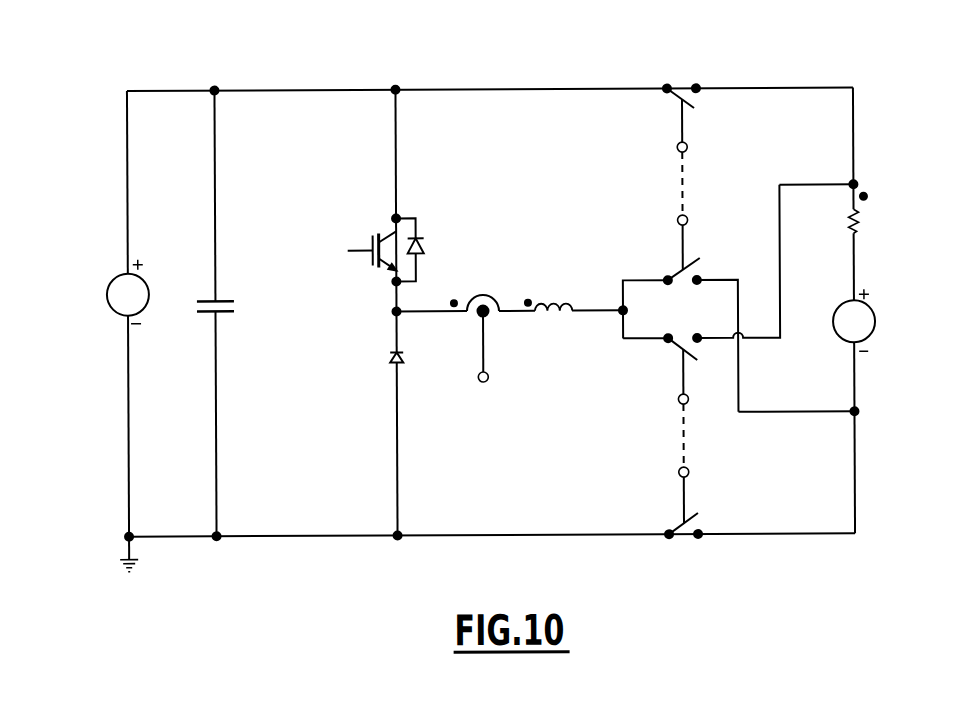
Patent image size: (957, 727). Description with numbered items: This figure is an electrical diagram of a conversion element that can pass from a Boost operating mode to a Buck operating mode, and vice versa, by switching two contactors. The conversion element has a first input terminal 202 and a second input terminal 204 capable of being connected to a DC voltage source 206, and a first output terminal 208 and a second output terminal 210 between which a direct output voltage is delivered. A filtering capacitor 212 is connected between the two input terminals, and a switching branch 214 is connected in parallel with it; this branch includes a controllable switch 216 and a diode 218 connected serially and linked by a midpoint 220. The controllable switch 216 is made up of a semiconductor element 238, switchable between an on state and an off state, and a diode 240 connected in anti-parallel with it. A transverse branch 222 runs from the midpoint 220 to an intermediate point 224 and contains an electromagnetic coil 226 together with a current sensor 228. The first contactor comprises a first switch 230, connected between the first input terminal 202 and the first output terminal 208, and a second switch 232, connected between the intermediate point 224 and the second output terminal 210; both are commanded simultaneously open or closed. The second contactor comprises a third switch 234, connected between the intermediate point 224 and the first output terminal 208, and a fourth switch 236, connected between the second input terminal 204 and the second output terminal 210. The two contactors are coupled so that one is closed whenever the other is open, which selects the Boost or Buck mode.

The first input terminal 202 is at (215, 89).
The second input terminal 204 is at (216, 539).
The DC voltage source 206 is at (110, 281).
The first output terminal 208 is at (856, 184).
The second output terminal 210 is at (856, 413).
The filtering capacitor 212 is at (225, 312).
The switching branch 214 is at (415, 200).
The controllable switch 216 is at (440, 266).
The diode 218 is at (401, 355).
The midpoint 220 is at (396, 311).
The transverse branch 222 is at (590, 218).
The intermediate point 224 is at (620, 312).
The electromagnetic coil 226 is at (572, 306).
The current sensor 228 is at (504, 340).
The first switch 230 is at (688, 64).
The second switch 232 is at (718, 260).
The third switch 234 is at (688, 320).
The fourth switch 236 is at (689, 555).
The semiconductor element 238 is at (353, 249).
The diode 240 is at (421, 248).